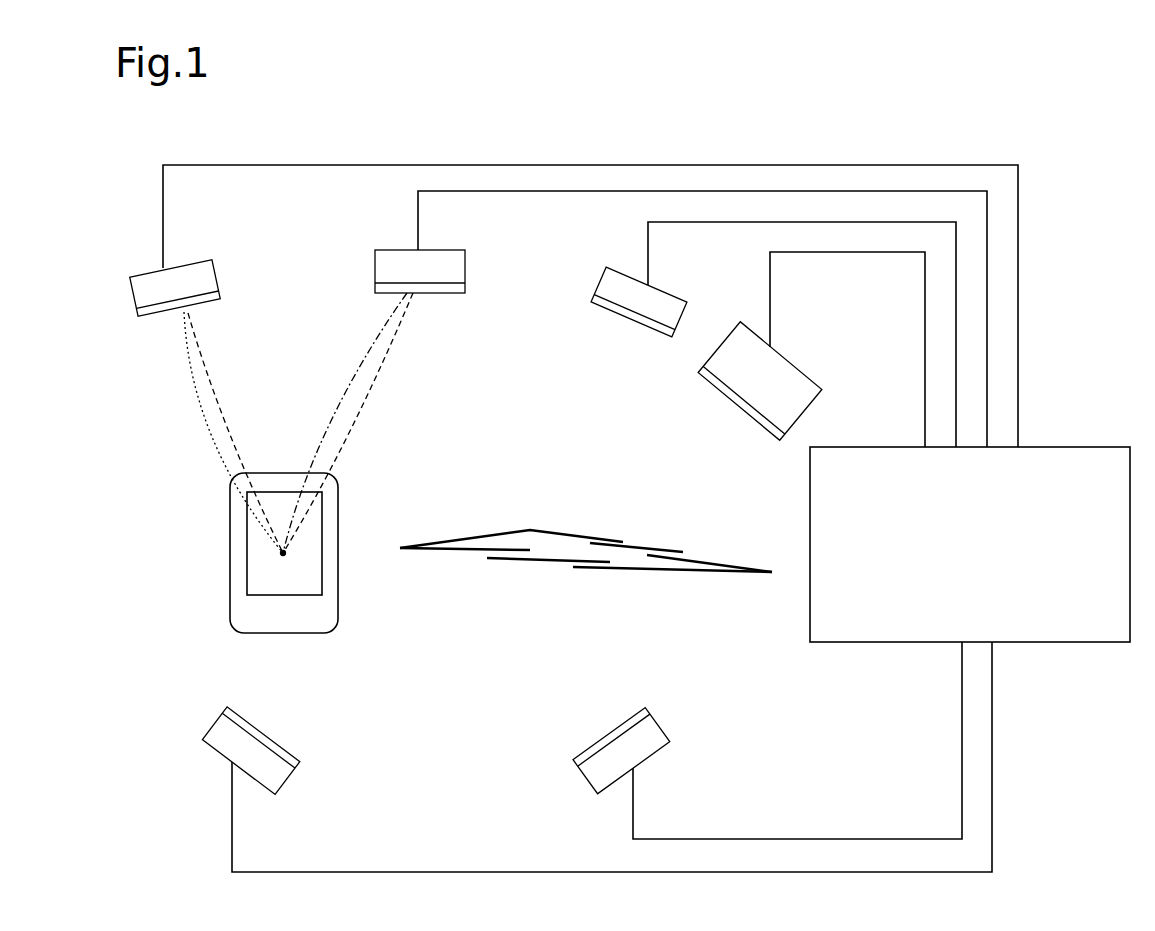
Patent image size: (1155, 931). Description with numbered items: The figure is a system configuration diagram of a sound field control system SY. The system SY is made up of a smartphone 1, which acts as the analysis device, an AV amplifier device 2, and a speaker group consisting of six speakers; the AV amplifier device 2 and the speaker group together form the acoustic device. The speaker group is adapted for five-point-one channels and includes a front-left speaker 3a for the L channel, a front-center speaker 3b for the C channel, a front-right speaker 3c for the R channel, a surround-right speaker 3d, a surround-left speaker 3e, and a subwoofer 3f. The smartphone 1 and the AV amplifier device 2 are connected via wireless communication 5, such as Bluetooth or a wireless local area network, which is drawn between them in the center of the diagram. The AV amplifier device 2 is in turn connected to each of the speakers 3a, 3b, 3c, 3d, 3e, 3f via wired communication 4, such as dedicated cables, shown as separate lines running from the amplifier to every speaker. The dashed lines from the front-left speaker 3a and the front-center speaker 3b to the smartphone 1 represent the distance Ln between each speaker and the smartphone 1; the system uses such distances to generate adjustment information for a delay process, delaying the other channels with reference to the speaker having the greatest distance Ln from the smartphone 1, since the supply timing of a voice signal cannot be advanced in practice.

The sound field control system SY is at (929, 78).
The smartphone 1 is at (340, 500).
The AV amplifier device 2 is at (1055, 447).
The front-left speaker 3a is at (222, 278).
The front-center speaker 3b is at (466, 270).
The front-right speaker 3c is at (660, 283).
The surround-right speaker 3d is at (660, 725).
The surround-left speaker 3e is at (278, 746).
The subwoofer 3f is at (792, 365).
The wired communication 4 is at (300, 168).
The wireless communication 5 is at (525, 530).
The distance Ln is at (298, 423).